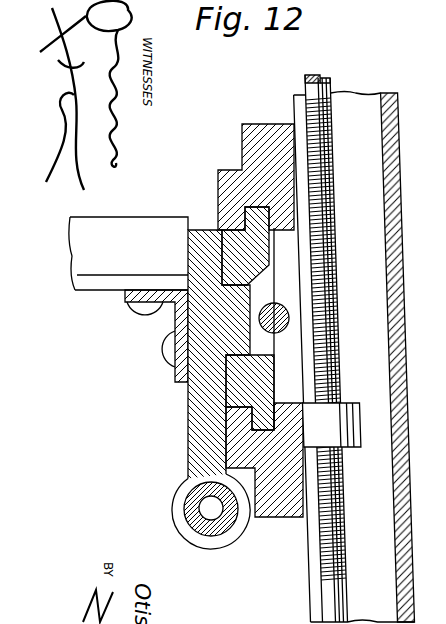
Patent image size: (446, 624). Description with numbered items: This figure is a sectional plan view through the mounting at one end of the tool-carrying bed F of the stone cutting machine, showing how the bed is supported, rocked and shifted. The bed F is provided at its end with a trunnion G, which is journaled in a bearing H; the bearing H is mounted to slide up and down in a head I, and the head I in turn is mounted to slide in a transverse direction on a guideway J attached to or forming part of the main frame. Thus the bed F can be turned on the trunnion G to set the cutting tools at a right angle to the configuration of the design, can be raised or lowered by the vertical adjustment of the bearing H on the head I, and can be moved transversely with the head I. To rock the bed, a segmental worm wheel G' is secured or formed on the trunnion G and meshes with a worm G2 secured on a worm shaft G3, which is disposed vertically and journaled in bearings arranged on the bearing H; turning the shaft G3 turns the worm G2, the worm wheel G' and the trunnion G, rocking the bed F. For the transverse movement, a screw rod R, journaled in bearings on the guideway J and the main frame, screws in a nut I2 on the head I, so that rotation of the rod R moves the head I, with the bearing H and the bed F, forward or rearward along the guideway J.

The bed F is at (93, 270).
The trunnion G is at (196, 354).
The segmental worm wheel G' is at (158, 377).
The worm G2 is at (174, 516).
The worm shaft G3 is at (196, 540).
The bearing H is at (271, 256).
The head I is at (242, 153).
The nut I2 is at (343, 403).
The guideway J is at (385, 300).
The transverse screw rod R is at (330, 247).